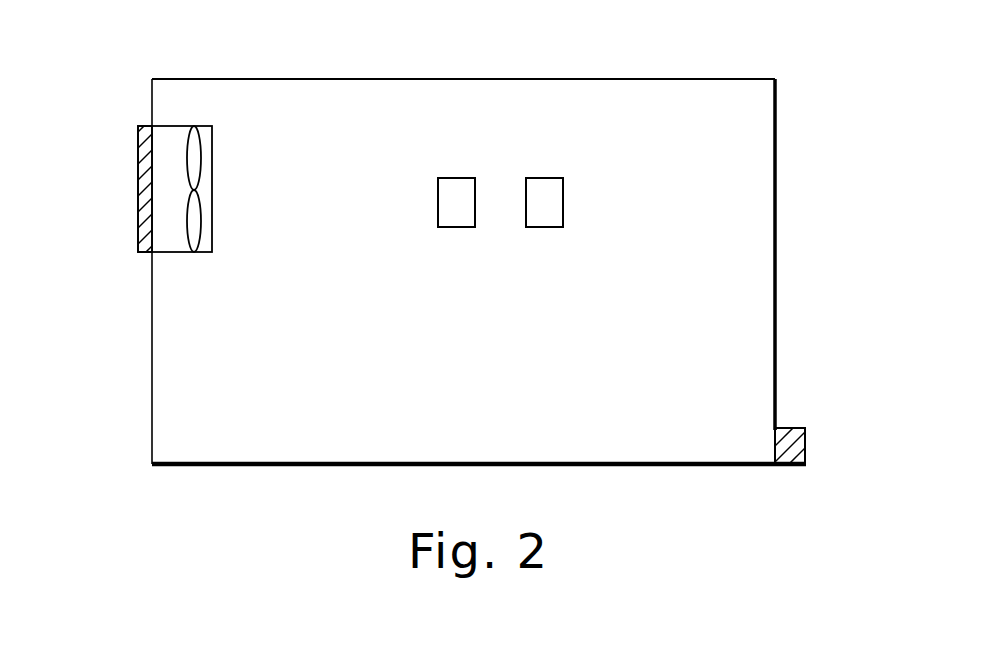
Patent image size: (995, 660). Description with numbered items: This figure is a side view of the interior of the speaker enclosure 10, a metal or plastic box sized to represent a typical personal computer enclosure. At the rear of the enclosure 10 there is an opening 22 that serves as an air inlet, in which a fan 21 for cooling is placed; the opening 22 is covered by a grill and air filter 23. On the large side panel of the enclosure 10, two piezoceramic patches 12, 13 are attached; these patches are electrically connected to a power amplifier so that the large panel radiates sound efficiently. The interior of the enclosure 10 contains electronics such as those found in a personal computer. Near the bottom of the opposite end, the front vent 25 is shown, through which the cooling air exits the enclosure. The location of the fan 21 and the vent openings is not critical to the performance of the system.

The speaker enclosure 10 is at (704, 80).
The piezoceramic patch 12 is at (457, 185).
The piezoceramic patch 13 is at (548, 185).
The fan 21 is at (194, 126).
The opening 22 is at (130, 190).
The grill and air filter 23 is at (136, 249).
The front vent 25 is at (807, 448).